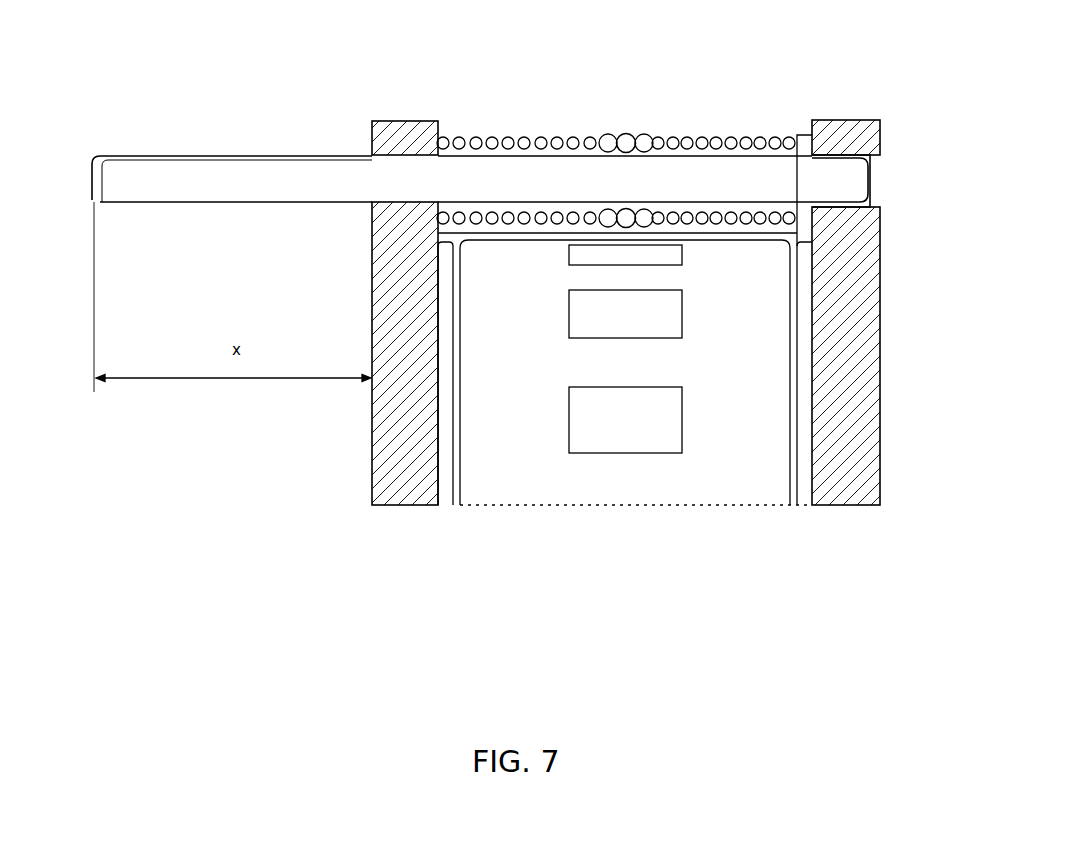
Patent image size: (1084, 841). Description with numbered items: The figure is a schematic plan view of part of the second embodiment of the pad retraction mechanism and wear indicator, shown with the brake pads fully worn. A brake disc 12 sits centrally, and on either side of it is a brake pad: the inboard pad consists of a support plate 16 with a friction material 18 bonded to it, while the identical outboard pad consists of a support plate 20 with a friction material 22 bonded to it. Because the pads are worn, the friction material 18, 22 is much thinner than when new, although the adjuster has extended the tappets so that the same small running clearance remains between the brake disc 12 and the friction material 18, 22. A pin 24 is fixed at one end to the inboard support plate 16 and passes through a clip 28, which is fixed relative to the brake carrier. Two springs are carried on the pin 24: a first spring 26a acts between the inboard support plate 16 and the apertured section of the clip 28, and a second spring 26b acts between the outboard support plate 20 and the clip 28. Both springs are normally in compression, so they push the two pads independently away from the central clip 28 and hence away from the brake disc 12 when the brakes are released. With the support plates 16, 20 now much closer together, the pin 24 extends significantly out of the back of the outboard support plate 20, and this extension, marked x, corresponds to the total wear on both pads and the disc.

The brake disc 12 is at (634, 488).
The support plate 16 is at (855, 478).
The friction material 18 is at (806, 500).
The support plate 20 is at (397, 486).
The friction material 22 is at (446, 500).
The pin 24 is at (241, 175).
The first spring 26a is at (718, 128).
The second spring 26b is at (528, 128).
The clip 28 is at (625, 128).